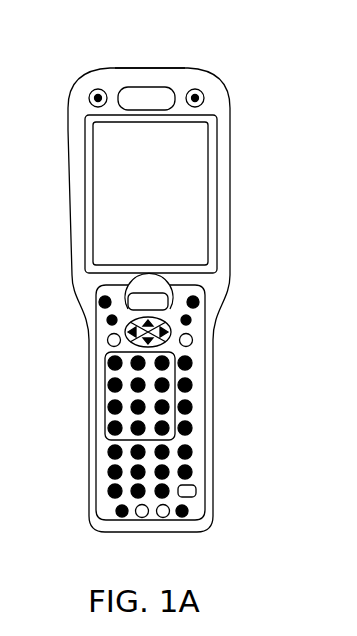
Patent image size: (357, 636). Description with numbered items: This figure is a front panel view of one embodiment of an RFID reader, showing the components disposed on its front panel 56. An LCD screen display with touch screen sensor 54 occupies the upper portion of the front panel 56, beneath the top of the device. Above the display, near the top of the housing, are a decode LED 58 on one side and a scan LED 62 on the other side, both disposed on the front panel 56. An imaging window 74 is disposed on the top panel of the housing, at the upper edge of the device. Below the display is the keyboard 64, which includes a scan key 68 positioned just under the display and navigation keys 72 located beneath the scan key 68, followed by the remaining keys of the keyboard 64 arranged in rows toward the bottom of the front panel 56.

The LCD screen display with touch screen sensor 54 is at (102, 195).
The front panel 56 is at (68, 138).
The decode LED 58 is at (89, 97).
The scan LED 62 is at (204, 92).
The keyboard 64 is at (104, 401).
The scan key 68 is at (137, 293).
The navigation keys 72 is at (112, 332).
The imaging window 74 is at (140, 68).